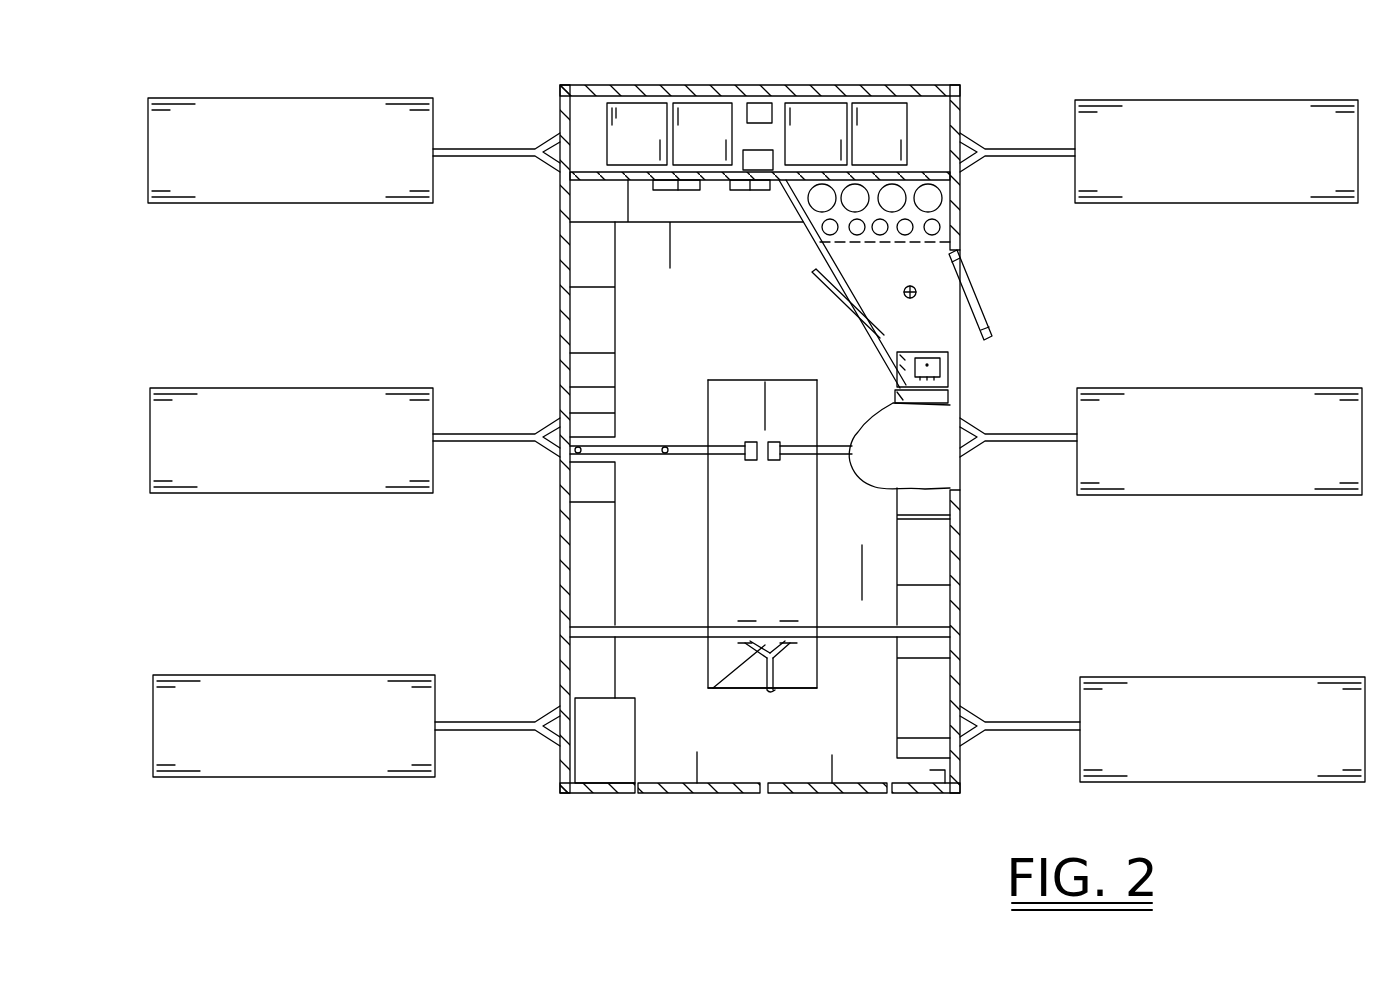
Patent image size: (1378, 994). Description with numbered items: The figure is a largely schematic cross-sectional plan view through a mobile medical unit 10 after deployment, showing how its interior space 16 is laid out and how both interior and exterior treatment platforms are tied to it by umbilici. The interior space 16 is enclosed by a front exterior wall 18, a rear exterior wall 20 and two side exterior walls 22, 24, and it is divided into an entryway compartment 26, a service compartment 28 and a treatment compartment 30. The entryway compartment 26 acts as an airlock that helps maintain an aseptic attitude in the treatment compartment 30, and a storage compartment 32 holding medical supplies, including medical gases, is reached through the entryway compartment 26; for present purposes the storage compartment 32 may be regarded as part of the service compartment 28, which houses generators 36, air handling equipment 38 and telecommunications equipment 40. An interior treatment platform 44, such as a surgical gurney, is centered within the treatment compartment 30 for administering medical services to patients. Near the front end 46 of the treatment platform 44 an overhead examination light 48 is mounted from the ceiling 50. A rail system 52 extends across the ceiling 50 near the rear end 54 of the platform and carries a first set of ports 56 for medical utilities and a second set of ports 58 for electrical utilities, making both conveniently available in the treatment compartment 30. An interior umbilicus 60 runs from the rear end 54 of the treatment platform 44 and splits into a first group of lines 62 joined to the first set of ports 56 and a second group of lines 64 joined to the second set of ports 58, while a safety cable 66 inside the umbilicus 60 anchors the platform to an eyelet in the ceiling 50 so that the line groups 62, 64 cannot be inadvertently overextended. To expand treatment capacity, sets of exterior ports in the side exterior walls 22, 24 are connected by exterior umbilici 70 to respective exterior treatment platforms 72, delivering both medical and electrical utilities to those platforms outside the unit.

The mobile medical unit 10 is at (612, 78).
The interior space 16 is at (656, 304).
The front exterior wall 18 is at (808, 85).
The rear exterior wall 20 is at (622, 795).
The side exterior wall 22 is at (560, 230).
The side exterior wall 24 is at (960, 554).
The entryway compartment 26 is at (904, 343).
The service compartment 28 is at (930, 122).
The treatment compartment 30 is at (731, 328).
The storage compartment 32 is at (960, 199).
The generators 36 is at (619, 144).
The air handling equipment 38 is at (863, 144).
The telecommunications equipment 40 is at (760, 103).
The interior treatment platform 44 is at (744, 534).
The front end 46 is at (720, 380).
The overhead examination light 48 is at (746, 444).
The ceiling 50 is at (867, 420).
The rail system 52 is at (683, 627).
The rear end 54 is at (714, 690).
The first set of ports 56 is at (750, 621).
The second set of ports 58 is at (785, 621).
The interior umbilicus 60 is at (776, 691).
The first group of lines 62 is at (744, 650).
The second group of lines 64 is at (792, 650).
The safety cable 66 is at (717, 689).
The exterior umbilici 70 is at (516, 148).
The exterior treatment platforms 72 is at (257, 166).